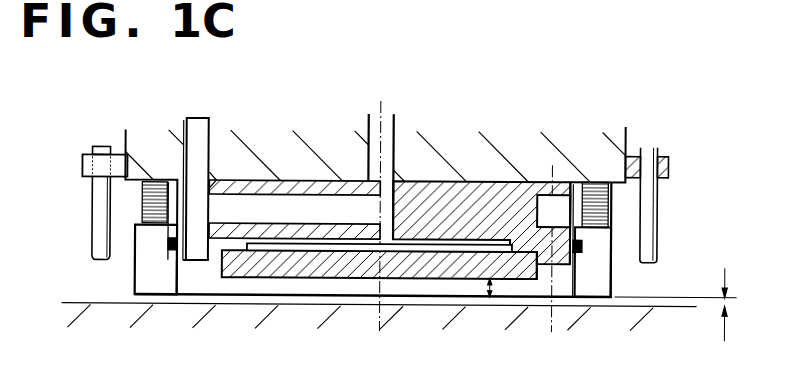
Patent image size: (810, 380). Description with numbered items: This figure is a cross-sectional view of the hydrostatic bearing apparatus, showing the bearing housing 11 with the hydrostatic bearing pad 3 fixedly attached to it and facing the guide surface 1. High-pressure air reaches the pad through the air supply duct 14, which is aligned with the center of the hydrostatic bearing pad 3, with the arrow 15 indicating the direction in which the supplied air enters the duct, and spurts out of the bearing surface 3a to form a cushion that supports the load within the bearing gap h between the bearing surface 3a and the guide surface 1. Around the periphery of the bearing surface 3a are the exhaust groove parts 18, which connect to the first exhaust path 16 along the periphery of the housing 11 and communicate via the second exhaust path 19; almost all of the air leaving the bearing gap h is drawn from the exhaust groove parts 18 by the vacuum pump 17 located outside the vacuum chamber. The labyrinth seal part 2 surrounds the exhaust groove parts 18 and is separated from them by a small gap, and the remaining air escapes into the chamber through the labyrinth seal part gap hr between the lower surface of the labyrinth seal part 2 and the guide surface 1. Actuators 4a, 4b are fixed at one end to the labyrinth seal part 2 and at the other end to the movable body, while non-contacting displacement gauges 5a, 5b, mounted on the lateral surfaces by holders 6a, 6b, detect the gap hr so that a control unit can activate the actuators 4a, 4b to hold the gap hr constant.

The guide surface 1 is at (160, 306).
The labyrinth seal part 2 is at (143, 275).
The hydrostatic bearing pad 3 is at (285, 260).
The bearing surface 3a is at (520, 275).
The actuator 4a is at (597, 199).
The actuator 4b is at (147, 200).
The non-contacting displacement gauge 5a is at (648, 144).
The non-contacting displacement gauge 5b is at (98, 147).
The holder 6a is at (668, 160).
The holder 6b is at (82, 165).
The bearing housing 11 is at (512, 194).
The air supply duct 14 is at (387, 156).
The pressing direction 15 is at (380, 98).
The first exhaust path 16 is at (293, 200).
The vacuum pump 17 is at (196, 105).
The exhaust groove part 18 is at (195, 250).
The second exhaust path 19 is at (182, 140).
The bearing gap h is at (480, 296).
The labyrinth seal part gap hr is at (733, 299).